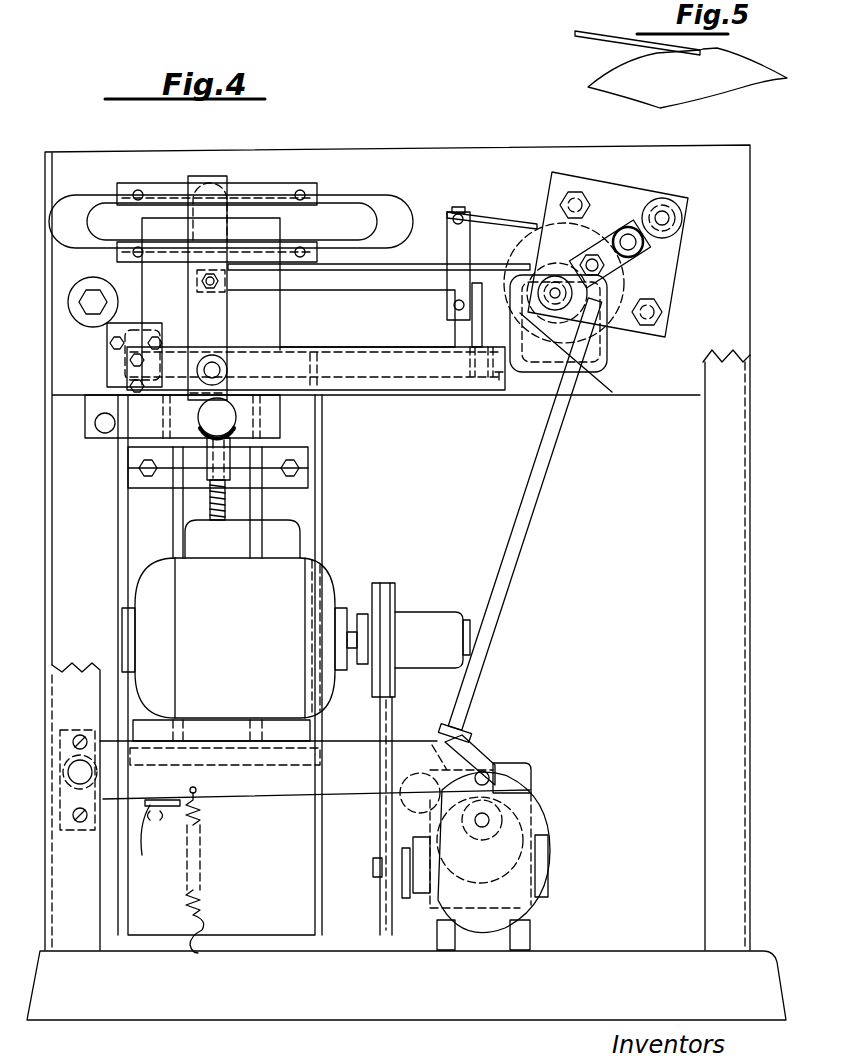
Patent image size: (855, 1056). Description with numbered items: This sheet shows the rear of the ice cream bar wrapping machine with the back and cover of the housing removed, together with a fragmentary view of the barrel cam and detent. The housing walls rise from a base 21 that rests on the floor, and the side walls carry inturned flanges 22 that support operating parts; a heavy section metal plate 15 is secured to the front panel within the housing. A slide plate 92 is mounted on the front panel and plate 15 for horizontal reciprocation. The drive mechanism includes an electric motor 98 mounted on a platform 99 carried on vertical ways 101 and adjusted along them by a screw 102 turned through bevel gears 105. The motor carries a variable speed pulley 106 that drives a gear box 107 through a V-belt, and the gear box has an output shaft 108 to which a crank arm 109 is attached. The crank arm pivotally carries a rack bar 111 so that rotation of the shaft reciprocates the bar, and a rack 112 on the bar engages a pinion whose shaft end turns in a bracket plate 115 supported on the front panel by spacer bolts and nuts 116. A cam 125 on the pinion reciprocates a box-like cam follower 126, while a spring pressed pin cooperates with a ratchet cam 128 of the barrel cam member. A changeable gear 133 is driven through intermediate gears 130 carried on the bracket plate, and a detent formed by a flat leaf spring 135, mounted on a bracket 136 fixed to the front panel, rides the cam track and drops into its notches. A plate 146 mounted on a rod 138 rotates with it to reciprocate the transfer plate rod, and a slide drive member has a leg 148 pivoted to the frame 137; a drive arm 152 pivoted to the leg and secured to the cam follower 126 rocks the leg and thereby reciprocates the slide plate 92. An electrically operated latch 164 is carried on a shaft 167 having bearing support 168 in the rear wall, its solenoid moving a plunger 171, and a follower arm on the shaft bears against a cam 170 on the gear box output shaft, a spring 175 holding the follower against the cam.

In FIG. 4, the heavy section metal plate 15 is at (648, 385).
In FIG. 4, the base 21 is at (40, 978).
In FIG. 4, the inturned flanges 22 is at (712, 500).
In FIG. 4, the slide plate 92 is at (318, 210).
In FIG. 4, the electric motor 98 is at (325, 580).
In FIG. 4, the platform 99 is at (290, 540).
In FIG. 4, the vertical ways 101 is at (265, 502).
In FIG. 4, the screw 102 is at (232, 500).
In FIG. 4, the bevel gears 105 is at (254, 427).
In FIG. 4, the variable speed pulley 106 is at (410, 600).
In FIG. 4, the gear box 107 is at (545, 900).
In FIG. 4, the output shaft 108 is at (487, 822).
In FIG. 4, the crank arm 109 is at (482, 760).
In FIG. 4, the rack bar 111 is at (517, 562).
In FIG. 4, the rack 112 is at (568, 410).
In FIG. 4, the bracket plate 115 is at (598, 187).
In FIG. 4, the spacer bolts and nuts 116 is at (577, 195).
In FIG. 4, the cam 125 is at (540, 372).
In FIG. 4, the box-like cam follower 126 is at (516, 366).
In FIG. 4, the ratchet cam 128 is at (523, 241).
In FIG. 5, the ratchet cam 128 is at (740, 67).
In FIG. 4, the intermediate gears 130 is at (652, 267).
In FIG. 4, the changeable gear 133 is at (676, 204).
In FIG. 4, the flat leaf spring 135 is at (498, 214).
In FIG. 5, the flat leaf spring 135 is at (600, 40).
In FIG. 4, the bracket 136 is at (451, 238).
In FIG. 4, the frame 137 is at (426, 388).
In FIG. 4, the rod 138 is at (352, 400).
In FIG. 4, the plate 146 is at (268, 313).
In FIG. 4, the leg 148 is at (216, 328).
In FIG. 4, the drive arm 152 is at (380, 286).
In FIG. 4, the electrically operated latch 164 is at (167, 826).
In FIG. 4, the shaft 167 is at (63, 762).
In FIG. 4, the bearing support 168 is at (65, 815).
In FIG. 4, the cam 170 is at (545, 830).
In FIG. 4, the plunger 171 is at (140, 812).
In FIG. 4, the spring 175 is at (206, 905).